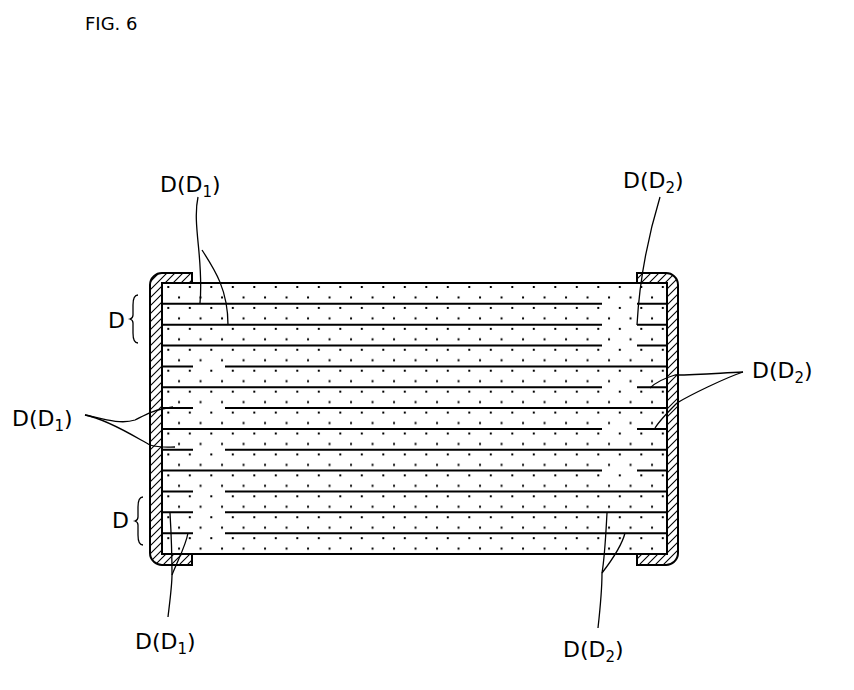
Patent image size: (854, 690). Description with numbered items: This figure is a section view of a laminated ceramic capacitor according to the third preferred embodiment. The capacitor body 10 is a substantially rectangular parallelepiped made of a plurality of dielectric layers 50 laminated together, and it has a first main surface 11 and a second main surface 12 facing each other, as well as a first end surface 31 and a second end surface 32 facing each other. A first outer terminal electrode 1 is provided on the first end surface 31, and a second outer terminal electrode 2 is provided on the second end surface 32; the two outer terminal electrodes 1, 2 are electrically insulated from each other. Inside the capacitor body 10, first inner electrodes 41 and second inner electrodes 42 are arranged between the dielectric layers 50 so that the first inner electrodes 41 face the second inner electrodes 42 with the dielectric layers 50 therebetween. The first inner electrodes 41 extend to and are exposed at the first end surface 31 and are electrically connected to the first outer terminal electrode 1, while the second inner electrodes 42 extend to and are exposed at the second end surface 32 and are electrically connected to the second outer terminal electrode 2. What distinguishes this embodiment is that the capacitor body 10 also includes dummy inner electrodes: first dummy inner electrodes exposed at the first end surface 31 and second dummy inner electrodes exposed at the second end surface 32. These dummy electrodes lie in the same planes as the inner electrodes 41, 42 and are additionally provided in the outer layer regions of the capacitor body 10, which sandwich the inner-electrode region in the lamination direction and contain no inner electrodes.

The first outer terminal electrode 1 is at (149, 452).
The second outer terminal electrode 2 is at (680, 467).
The capacitor body 10 is at (524, 280).
The first main surface 11 is at (403, 283).
The second main surface 12 is at (430, 555).
The first end surface 31 is at (155, 483).
The second end surface 32 is at (682, 503).
The first inner electrodes 41 is at (320, 388).
The second inner electrodes 42 is at (322, 450).
The dielectric layers 50 is at (498, 400).